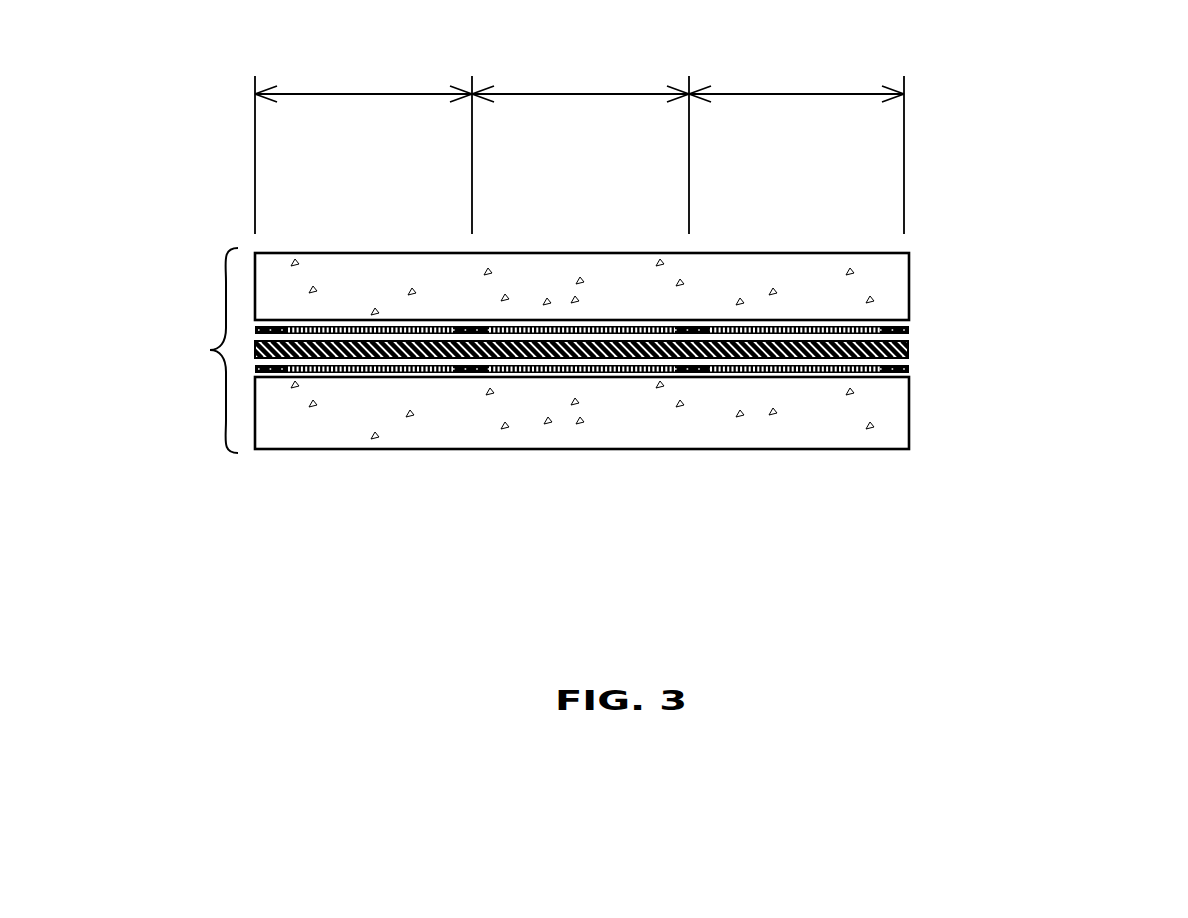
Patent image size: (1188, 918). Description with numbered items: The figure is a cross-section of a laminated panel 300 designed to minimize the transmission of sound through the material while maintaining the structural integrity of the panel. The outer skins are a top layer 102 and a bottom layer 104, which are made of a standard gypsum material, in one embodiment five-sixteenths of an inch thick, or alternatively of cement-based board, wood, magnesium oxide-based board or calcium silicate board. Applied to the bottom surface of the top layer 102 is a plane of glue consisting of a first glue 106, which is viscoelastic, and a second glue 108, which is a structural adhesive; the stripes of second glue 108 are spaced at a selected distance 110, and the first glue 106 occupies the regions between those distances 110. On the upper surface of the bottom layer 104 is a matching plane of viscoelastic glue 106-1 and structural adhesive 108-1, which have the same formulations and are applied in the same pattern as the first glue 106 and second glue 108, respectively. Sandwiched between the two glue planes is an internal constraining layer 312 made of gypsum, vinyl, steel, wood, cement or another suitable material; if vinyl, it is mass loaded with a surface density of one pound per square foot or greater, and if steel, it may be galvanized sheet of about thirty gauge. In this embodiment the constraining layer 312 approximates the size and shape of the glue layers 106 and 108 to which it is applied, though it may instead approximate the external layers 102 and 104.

The top layer 102 is at (877, 277).
The bottom layer 104 is at (855, 433).
The first glue 106 is at (398, 326).
The viscoelastic glue 106-1 is at (404, 373).
The second glue 108 is at (270, 326).
The structural adhesive 108-1 is at (270, 373).
The selected distance 110 is at (579, 143).
The laminated panel 300 is at (195, 350).
The constraining layer 312 is at (910, 348).